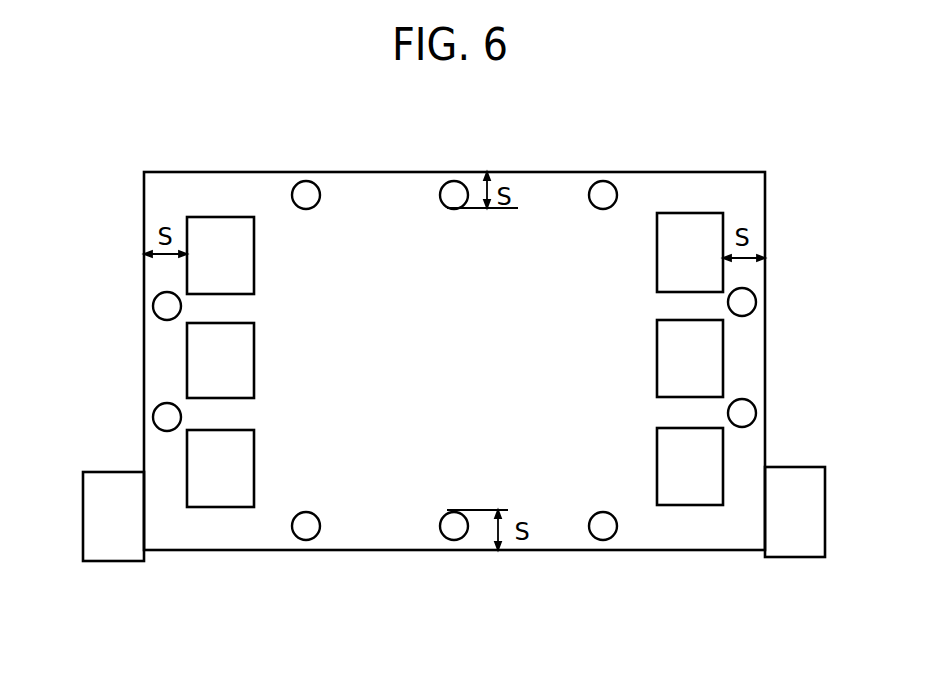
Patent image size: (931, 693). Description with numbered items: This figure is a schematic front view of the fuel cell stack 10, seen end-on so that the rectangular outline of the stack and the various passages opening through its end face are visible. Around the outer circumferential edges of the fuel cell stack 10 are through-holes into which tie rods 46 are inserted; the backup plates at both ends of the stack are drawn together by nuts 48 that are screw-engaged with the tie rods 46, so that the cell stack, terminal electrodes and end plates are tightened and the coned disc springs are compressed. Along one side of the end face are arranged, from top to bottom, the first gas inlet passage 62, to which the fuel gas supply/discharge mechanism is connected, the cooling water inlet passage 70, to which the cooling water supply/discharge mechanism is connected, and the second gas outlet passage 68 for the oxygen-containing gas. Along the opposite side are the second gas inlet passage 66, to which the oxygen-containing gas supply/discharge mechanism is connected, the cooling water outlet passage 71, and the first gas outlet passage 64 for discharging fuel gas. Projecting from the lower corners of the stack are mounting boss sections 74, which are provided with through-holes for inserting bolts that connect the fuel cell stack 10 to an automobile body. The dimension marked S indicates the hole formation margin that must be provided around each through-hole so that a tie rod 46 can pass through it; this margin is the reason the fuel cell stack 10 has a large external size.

The fuel cell stack 10 is at (454, 301).
The tie rod 46 is at (307, 194).
The nut 48 is at (163, 417).
The first gas inlet passage 62 is at (229, 226).
The first gas outlet passage 64 is at (683, 497).
The second gas inlet passage 66 is at (701, 225).
The second gas outlet passage 68 is at (212, 495).
The cooling water inlet passage 70 is at (195, 357).
The cooling water outlet passage 71 is at (708, 355).
The mounting boss section 74 is at (90, 475).